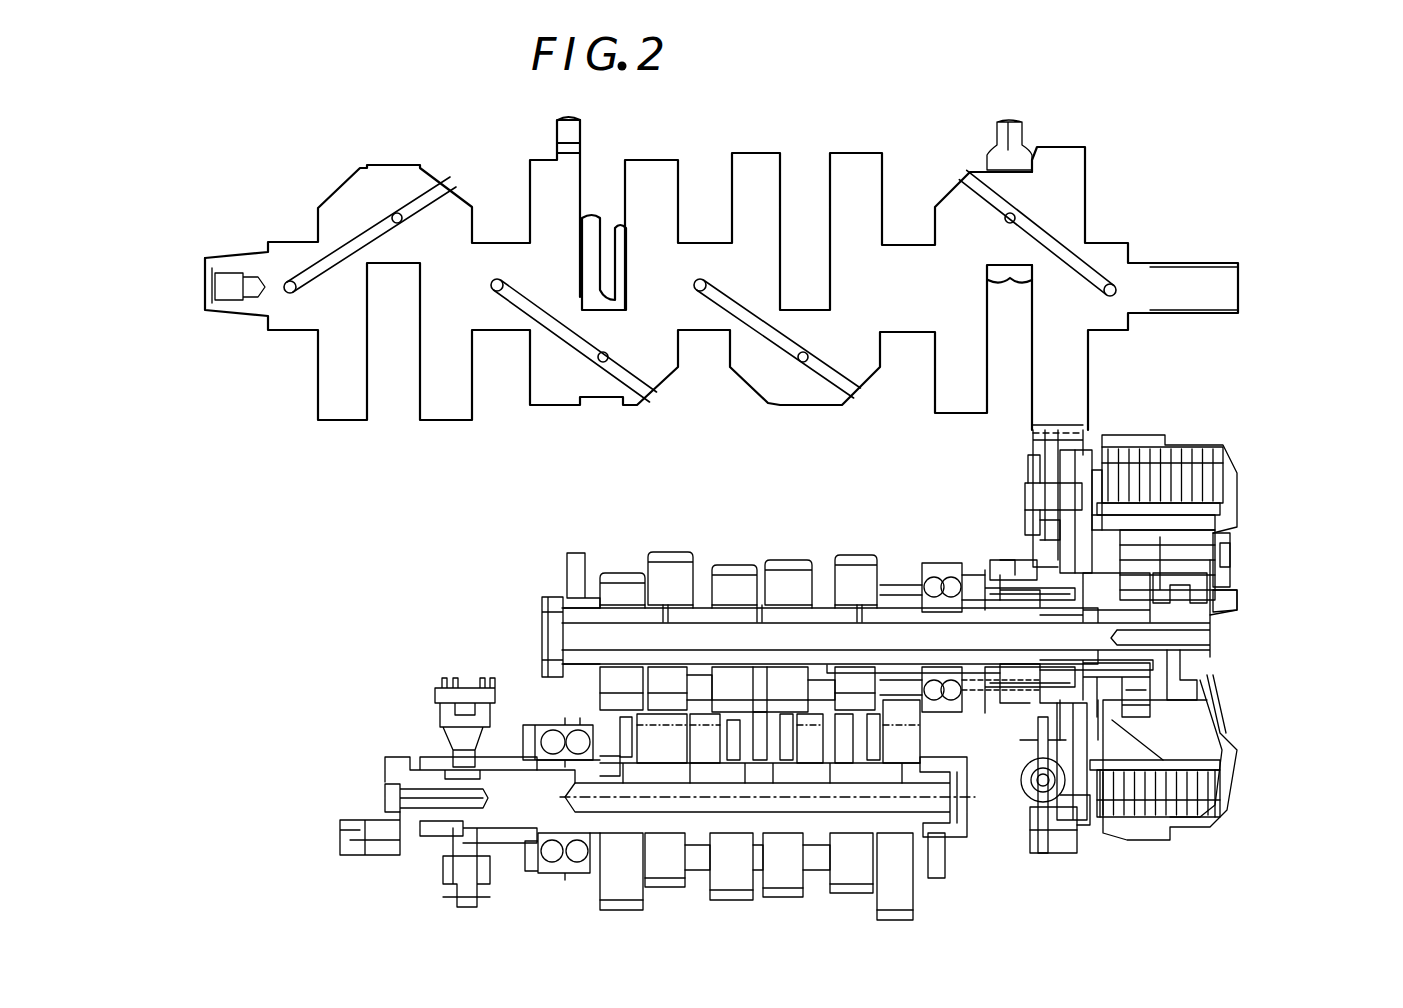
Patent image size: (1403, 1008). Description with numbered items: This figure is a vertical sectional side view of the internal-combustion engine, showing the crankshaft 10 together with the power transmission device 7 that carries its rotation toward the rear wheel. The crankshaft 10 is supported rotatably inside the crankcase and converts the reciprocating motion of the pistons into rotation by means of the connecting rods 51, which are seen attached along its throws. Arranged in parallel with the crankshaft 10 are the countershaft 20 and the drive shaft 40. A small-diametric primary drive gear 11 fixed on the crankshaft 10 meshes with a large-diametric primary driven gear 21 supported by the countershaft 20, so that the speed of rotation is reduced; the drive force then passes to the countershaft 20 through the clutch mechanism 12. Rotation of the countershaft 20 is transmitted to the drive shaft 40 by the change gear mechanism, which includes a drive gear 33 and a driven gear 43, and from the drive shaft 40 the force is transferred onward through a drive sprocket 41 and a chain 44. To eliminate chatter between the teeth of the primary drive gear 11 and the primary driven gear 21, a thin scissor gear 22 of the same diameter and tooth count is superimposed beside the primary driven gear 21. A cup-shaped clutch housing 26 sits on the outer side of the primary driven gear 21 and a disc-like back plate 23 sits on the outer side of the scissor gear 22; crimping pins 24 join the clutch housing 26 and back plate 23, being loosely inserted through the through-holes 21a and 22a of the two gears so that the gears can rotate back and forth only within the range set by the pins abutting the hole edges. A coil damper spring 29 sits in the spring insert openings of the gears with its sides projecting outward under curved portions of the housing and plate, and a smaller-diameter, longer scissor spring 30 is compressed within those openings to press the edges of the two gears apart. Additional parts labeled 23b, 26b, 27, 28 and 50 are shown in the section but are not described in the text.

The power transmission device 7 is at (1284, 296).
The crankshaft 10 is at (912, 320).
The primary drive gear 11 is at (1072, 352).
The clutch mechanism 12 is at (1254, 461).
The countershaft 20 is at (790, 632).
The primary driven gear 21 is at (1062, 420).
The through-hole 21a is at (1095, 470).
The scissor gear 22 is at (1038, 452).
The through-hole 22a is at (1040, 472).
The back plate 23 is at (1045, 525).
The bearing 23b is at (1025, 760).
The crimping pins 24 is at (1065, 490).
The clutch housing 26 is at (1180, 525).
The clutch bolt 26b is at (1062, 812).
The clutch pressure plate 27 is at (1215, 590).
The clutch plates 28 is at (1163, 760).
The damper spring 29 is at (1055, 835).
The scissor spring 30 is at (1028, 790).
The drive gear 33 is at (665, 550).
The drive shaft 40 is at (890, 830).
The drive sprocket 41 is at (470, 878).
The driven gear 43 is at (783, 875).
The chain 44 is at (440, 675).
The transmission 50 is at (543, 580).
The connecting rods 51 is at (1034, 132).